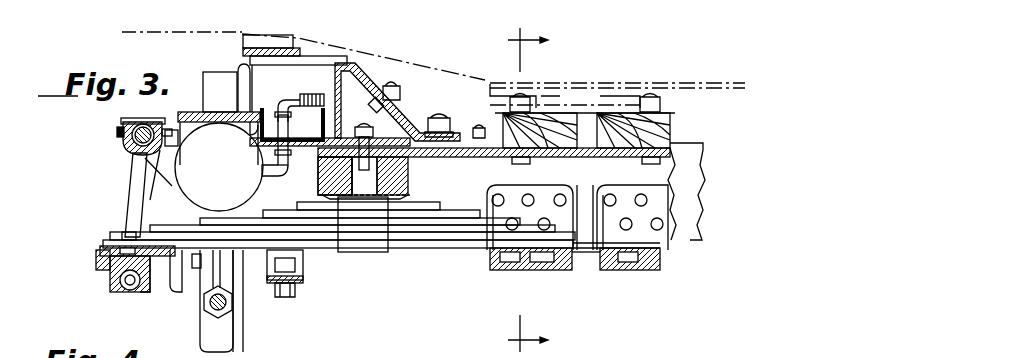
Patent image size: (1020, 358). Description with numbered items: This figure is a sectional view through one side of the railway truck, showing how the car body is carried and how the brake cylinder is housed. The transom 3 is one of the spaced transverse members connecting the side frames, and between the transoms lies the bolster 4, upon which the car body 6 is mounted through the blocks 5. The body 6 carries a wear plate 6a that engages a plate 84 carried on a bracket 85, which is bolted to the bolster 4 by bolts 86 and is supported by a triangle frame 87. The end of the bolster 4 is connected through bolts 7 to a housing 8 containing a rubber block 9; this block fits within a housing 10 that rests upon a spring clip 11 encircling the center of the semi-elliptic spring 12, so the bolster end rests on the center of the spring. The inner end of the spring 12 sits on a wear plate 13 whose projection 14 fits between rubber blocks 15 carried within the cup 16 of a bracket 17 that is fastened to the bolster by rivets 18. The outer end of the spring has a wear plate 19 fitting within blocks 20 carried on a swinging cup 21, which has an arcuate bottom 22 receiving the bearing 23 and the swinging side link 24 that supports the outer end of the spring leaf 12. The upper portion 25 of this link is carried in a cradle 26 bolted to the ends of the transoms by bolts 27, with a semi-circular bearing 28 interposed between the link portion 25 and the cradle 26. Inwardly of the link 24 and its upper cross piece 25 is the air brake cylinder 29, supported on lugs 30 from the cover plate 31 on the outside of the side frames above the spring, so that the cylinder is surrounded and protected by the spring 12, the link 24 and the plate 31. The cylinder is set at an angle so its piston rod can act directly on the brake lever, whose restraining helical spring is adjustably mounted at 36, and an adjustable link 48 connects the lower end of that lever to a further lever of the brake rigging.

The transom 3 is at (168, 183).
The bolster 4 is at (472, 158).
The blocks 5 is at (658, 130).
The car body 6 is at (650, 85).
The wear plate 6a is at (268, 34).
The bolts 7 is at (362, 126).
The housing 8 is at (409, 166).
The rubber block 9 is at (318, 178).
The housing 10 is at (410, 190).
The spring clip 11 is at (345, 272).
The semi-elliptic spring 12 is at (418, 240).
The wear plate 13 is at (492, 250).
The projection 14 is at (542, 270).
The rubber blocks 15 is at (508, 270).
The cup 16 is at (572, 260).
The bracket 17 is at (280, 112).
The rivets 18 is at (562, 194).
The wear plate 19 is at (100, 248).
The blocks 20 is at (100, 258).
The swinging cup 21 is at (110, 272).
The arcuate bottom 22 is at (160, 280).
The bearing 23 is at (138, 290).
The swinging side link 24 is at (122, 290).
The upper portion 25 is at (140, 120).
The cradle 26 is at (130, 150).
The bolts 27 is at (131, 175).
The semi-circular bearing 28 is at (122, 124).
The air brake cylinder 29 is at (219, 167).
The lugs 30 is at (183, 136).
The cover plate 31 is at (190, 122).
The adjustable mounting 36 is at (252, 126).
The adjustable link 48 is at (228, 312).
The plate 84 is at (303, 41).
The bracket 85 is at (337, 62).
The bolts 86 is at (402, 92).
The triangle frame 87 is at (352, 96).